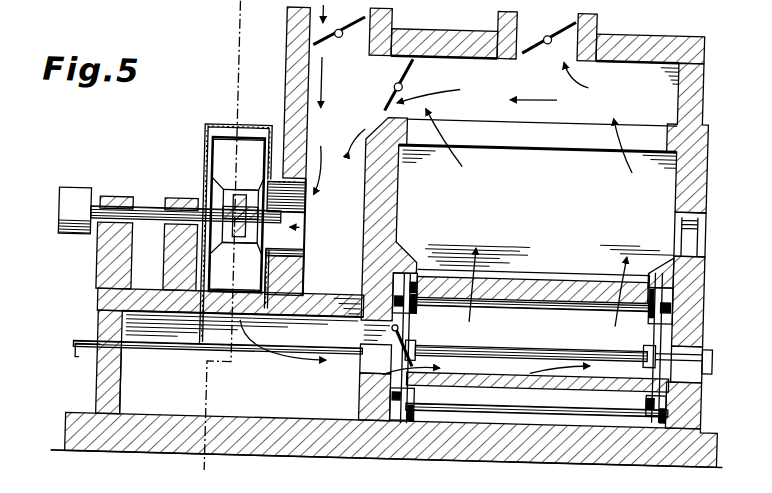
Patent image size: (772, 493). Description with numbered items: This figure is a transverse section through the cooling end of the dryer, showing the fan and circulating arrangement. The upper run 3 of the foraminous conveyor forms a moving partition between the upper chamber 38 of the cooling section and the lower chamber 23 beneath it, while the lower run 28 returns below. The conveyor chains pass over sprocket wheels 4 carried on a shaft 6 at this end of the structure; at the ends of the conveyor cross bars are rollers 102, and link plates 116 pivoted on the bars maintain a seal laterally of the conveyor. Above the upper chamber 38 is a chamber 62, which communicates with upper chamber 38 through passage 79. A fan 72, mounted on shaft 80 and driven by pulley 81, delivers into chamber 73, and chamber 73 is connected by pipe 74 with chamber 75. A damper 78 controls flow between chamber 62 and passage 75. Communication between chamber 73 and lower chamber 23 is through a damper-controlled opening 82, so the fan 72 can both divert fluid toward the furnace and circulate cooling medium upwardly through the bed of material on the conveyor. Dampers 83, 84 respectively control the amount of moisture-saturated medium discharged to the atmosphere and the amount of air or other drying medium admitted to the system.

The upper run 3 is at (559, 314).
The sprocket wheels 4 is at (414, 329).
The shaft 6 is at (588, 348).
The lower chamber 23 is at (564, 420).
The lower run 28 is at (504, 409).
The upper chamber 38 is at (666, 192).
The chamber 62 is at (664, 103).
The fan 72 is at (218, 168).
The chamber 73 is at (130, 385).
The pipe 74 is at (305, 242).
The chamber 75 is at (319, 102).
The damper 78 is at (402, 75).
The passage 79 is at (504, 130).
The shaft 80 is at (147, 210).
The pulley 81 is at (58, 221).
The damper-controlled opening 82 is at (370, 364).
The damper 83 is at (517, 52).
The damper 84 is at (346, 31).
The rollers 102 is at (406, 283).
The link plates 116 is at (418, 293).